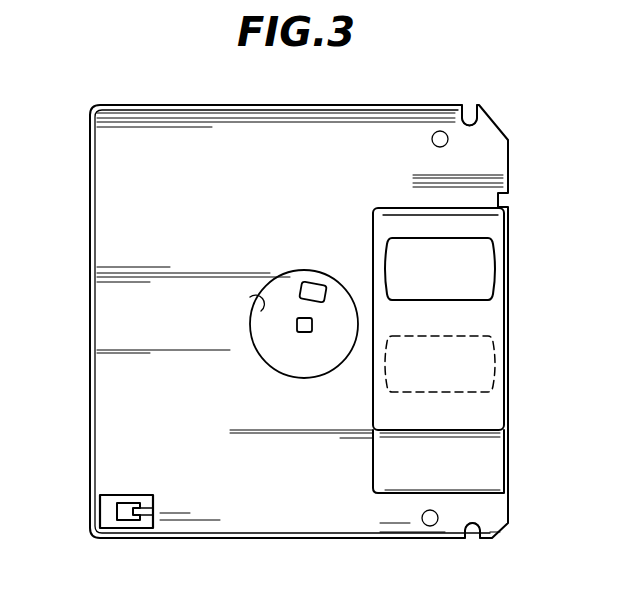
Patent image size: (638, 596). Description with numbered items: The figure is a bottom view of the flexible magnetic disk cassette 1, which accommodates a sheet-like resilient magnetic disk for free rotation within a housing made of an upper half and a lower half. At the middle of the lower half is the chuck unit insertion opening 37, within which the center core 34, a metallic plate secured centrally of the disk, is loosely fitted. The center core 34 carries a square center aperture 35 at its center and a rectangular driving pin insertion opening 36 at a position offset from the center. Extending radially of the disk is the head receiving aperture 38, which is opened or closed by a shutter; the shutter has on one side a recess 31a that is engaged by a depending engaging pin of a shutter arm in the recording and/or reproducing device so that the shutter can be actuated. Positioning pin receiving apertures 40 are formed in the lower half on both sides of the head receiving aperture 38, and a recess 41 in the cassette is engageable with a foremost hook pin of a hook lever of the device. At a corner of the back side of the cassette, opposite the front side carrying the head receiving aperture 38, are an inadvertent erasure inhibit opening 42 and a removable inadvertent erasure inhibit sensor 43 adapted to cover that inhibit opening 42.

The disk cartridge 1 is at (100, 140).
The recess 31a is at (508, 193).
The center core 34 is at (278, 353).
The center aperture 35 is at (302, 335).
The driving pin insertion opening 36 is at (315, 286).
The chuck unit insertion opening 37 is at (256, 312).
The head receiving aperture 38 is at (487, 363).
The positioning pin receiving apertures 40 is at (440, 131).
The recess 41 is at (468, 112).
The inadvertent erasure inhibit opening 42 is at (100, 512).
The inadvertent erasure inhibit sensor 43 is at (133, 518).